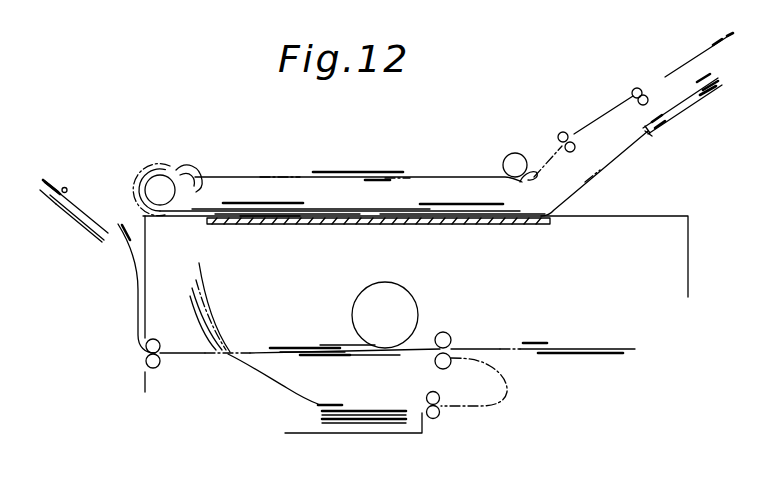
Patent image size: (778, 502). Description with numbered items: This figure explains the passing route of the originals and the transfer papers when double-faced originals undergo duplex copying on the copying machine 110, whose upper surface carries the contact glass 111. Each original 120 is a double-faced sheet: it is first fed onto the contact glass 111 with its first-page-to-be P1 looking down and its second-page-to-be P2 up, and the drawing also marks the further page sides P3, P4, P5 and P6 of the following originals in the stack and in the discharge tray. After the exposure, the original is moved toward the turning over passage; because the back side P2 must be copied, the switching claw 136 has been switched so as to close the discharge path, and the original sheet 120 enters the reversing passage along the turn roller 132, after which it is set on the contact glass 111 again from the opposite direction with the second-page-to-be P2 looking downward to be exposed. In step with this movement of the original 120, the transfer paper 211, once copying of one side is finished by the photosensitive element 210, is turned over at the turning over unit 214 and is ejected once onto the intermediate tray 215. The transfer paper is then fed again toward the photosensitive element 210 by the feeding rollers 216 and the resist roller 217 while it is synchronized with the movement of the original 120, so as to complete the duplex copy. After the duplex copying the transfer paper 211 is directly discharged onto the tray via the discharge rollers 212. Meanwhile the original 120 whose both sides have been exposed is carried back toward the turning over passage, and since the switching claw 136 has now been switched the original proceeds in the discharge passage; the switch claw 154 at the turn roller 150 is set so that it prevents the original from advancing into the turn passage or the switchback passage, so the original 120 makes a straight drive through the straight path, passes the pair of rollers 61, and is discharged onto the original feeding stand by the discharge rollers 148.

The copying machine 110 is at (690, 258).
The contact glass 111 is at (513, 226).
The original 120 is at (687, 108).
The turn roller 132 is at (157, 174).
The switching claw 136 is at (188, 172).
The discharge rollers 148 is at (633, 88).
The turn roller 150 is at (512, 153).
The switch claw 154 is at (533, 168).
The feed rollers 61 is at (576, 145).
The photosensitive element 210 is at (366, 293).
The transfer paper 211 is at (580, 355).
The discharge rollers 212 is at (145, 364).
The turning over unit 214 is at (215, 305).
The intermediate tray 215 is at (357, 433).
The feeding rollers 216 is at (437, 418).
The resist roller 217 is at (446, 332).
The first-page-to-be P1 is at (694, 128).
The second-page-to-be P2 is at (706, 95).
The sheet P3 is at (664, 128).
The sheet P4 is at (712, 84).
The sheet P5 is at (646, 130).
The sheet P6 is at (705, 76).